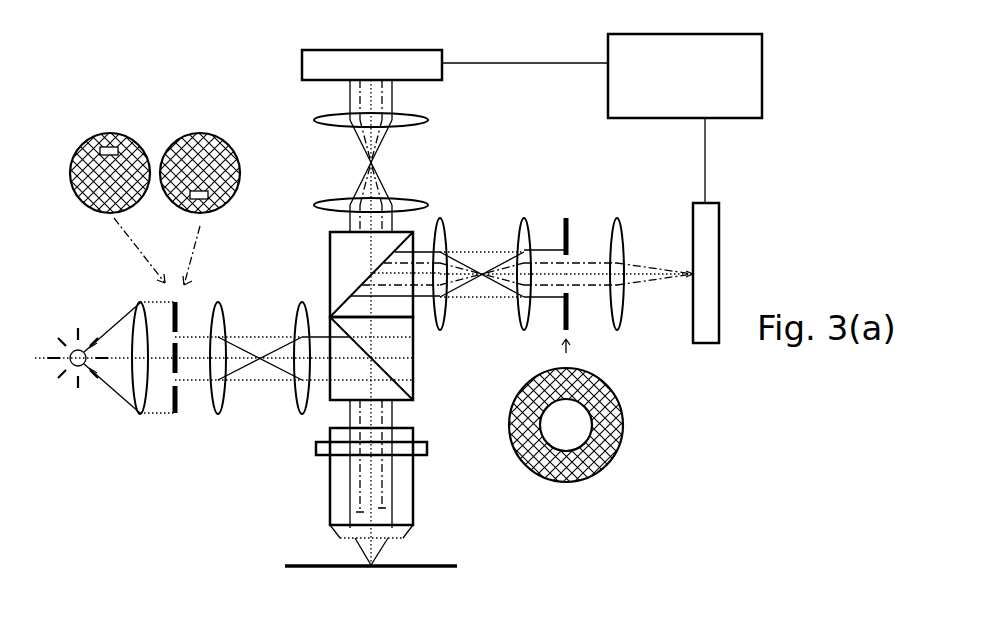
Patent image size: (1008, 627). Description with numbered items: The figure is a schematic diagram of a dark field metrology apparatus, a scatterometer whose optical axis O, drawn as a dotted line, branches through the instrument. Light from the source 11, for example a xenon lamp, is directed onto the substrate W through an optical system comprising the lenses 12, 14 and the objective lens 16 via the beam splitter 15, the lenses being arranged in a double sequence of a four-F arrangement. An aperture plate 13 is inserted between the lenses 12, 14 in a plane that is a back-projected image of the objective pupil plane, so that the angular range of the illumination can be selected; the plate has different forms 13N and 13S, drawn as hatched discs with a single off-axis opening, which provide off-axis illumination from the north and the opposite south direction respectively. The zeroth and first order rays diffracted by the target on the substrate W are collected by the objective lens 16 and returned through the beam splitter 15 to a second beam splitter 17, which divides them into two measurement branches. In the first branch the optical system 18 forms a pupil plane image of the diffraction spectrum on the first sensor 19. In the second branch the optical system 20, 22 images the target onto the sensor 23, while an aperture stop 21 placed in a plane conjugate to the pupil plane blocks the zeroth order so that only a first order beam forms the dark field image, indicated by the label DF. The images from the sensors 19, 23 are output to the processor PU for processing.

The source 11 is at (80, 386).
The lens 12 is at (140, 415).
The aperture plate 13 is at (177, 420).
The aperture plate 13N is at (106, 135).
The aperture plate 13S is at (212, 133).
The lens 14 is at (310, 420).
The beam splitter 15 is at (413, 365).
The objective lens 16 is at (413, 490).
The second beam splitter 17 is at (330, 269).
The optical system 18 is at (433, 213).
The first sensor 19 is at (436, 48).
The optical system 20 is at (430, 335).
The aperture stop 21 is at (566, 213).
The optical system 22 is at (617, 330).
The sensor 23 is at (722, 222).
The substrate W is at (295, 570).
The dark field image DF is at (668, 253).
The processor PU is at (685, 118).
The optical axis O is at (282, 358).